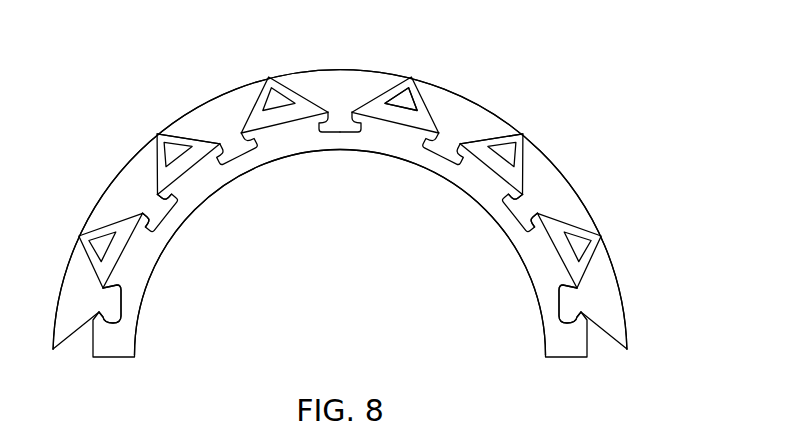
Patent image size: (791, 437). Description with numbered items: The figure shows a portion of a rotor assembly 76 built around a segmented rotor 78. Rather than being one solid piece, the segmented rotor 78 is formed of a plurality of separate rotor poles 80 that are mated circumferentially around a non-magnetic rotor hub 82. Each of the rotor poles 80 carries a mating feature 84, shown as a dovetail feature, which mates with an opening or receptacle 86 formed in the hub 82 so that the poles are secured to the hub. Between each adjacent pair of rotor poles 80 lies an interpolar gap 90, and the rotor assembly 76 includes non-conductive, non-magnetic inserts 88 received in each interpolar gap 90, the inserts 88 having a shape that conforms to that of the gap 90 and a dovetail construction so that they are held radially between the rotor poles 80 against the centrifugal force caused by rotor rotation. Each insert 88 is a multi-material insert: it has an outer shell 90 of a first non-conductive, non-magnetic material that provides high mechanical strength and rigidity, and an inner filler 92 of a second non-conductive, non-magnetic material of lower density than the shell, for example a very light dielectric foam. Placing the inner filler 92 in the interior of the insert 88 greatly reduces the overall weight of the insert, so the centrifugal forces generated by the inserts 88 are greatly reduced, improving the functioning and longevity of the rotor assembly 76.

The rotor assembly 76 is at (594, 70).
The segmented rotor 78 is at (127, 157).
The rotor poles 80 is at (216, 97).
The non-magnetic rotor hub 82 is at (292, 143).
The mating feature 84 is at (158, 236).
The opening/receptacle 86 is at (152, 238).
The non-conductive, non-magnetic inserts 88 is at (164, 138).
The interpolar gap 90 is at (397, 82).
The inner filler 92 is at (393, 99).